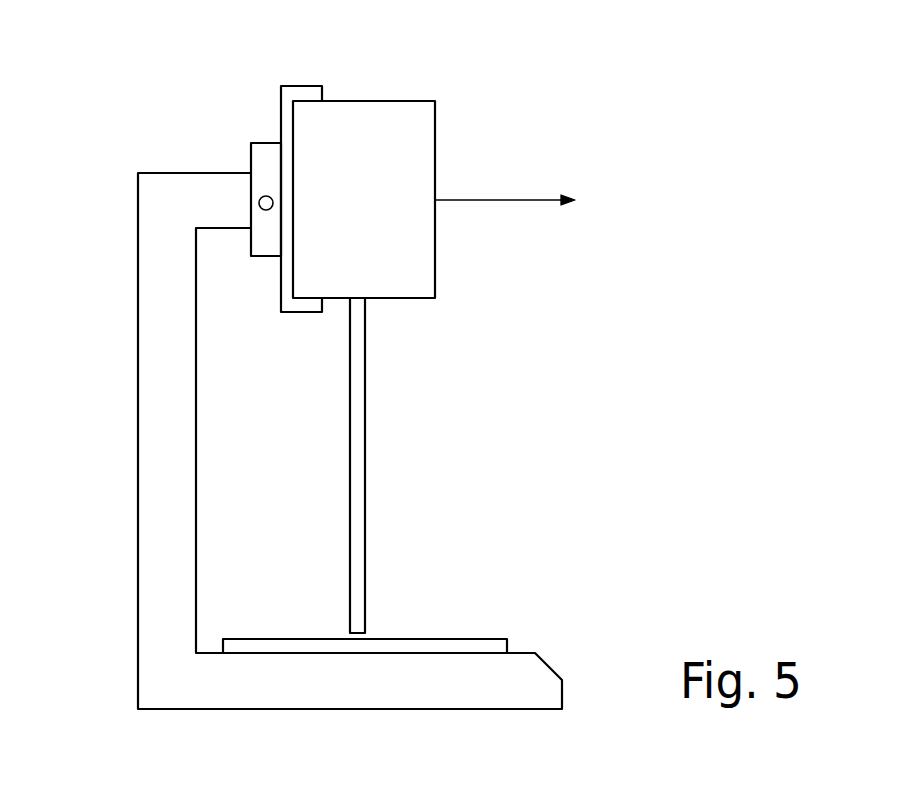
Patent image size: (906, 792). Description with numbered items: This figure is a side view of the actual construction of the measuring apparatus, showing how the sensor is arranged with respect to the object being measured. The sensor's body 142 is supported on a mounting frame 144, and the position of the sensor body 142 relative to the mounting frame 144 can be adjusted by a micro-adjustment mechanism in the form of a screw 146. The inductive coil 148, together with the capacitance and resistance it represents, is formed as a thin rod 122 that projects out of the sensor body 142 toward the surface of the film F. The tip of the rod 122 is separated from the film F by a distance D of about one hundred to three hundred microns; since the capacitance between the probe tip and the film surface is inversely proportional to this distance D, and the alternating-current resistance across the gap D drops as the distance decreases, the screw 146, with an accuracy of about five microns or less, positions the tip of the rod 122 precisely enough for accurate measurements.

The sensor's body 142 is at (425, 147).
The mounting frame 144 is at (158, 412).
The screw 146 is at (262, 154).
The rod 122 is at (365, 390).
The coil 148 is at (364, 630).
The film F is at (262, 634).
The distance D is at (363, 638).